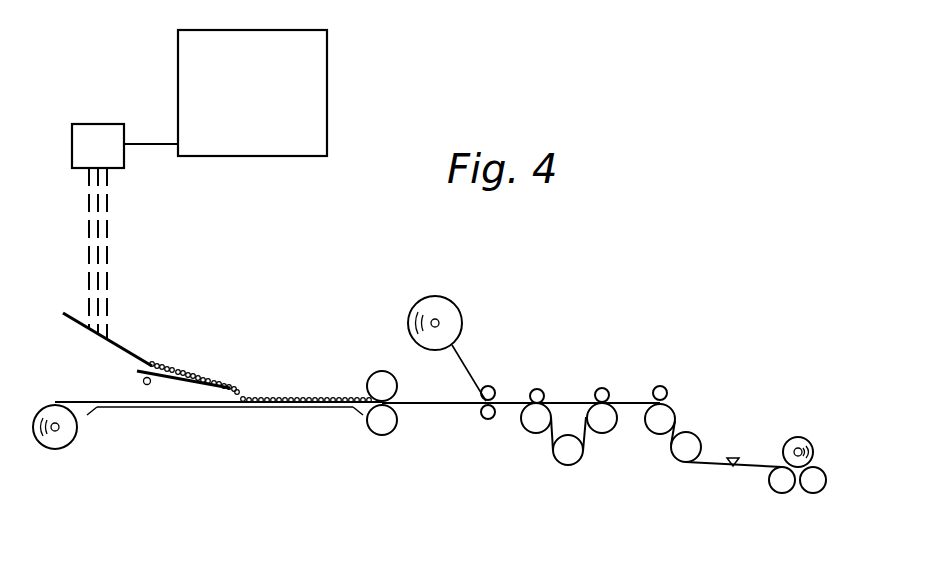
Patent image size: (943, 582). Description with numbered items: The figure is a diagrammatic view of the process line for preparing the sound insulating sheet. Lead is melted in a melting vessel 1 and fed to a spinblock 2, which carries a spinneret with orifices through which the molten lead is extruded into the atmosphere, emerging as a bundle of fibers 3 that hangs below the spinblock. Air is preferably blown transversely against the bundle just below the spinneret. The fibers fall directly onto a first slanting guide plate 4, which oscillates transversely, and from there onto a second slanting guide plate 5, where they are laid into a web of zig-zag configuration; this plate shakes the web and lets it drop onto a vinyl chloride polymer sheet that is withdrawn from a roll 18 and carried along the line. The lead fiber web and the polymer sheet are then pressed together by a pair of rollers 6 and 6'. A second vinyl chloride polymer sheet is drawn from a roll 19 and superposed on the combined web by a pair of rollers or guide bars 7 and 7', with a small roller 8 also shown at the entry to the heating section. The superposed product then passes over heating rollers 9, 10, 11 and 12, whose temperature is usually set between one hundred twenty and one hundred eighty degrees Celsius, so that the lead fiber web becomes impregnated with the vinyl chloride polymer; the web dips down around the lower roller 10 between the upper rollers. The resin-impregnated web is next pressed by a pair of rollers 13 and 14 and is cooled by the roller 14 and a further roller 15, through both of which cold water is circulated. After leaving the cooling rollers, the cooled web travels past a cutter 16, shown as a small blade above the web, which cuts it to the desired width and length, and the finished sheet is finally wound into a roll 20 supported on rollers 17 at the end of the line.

The melting vessel 1 is at (312, 102).
The spinblock 2 is at (95, 133).
The bundle of fibers 3 is at (108, 239).
The first slanting guide plate 4 is at (93, 331).
The second slanting guide plate 5 is at (175, 402).
The roller 6 is at (377, 359).
The roller 6' is at (382, 449).
The roller or guide bar 7 is at (491, 372).
The roller or guide bar 7' is at (489, 449).
The small press roller 8 is at (538, 389).
The heating roller 9 is at (535, 434).
The heating roller 10 is at (572, 466).
The heating roller 11 is at (610, 434).
The heating roller 12 is at (602, 388).
The roller 13 is at (660, 386).
The roller 14 is at (655, 434).
The roller 15 is at (700, 437).
The cutter 16 is at (735, 457).
The rollers 17 is at (786, 493).
The roll 18 is at (60, 454).
The roll 19 is at (462, 302).
The roll 20 is at (800, 438).